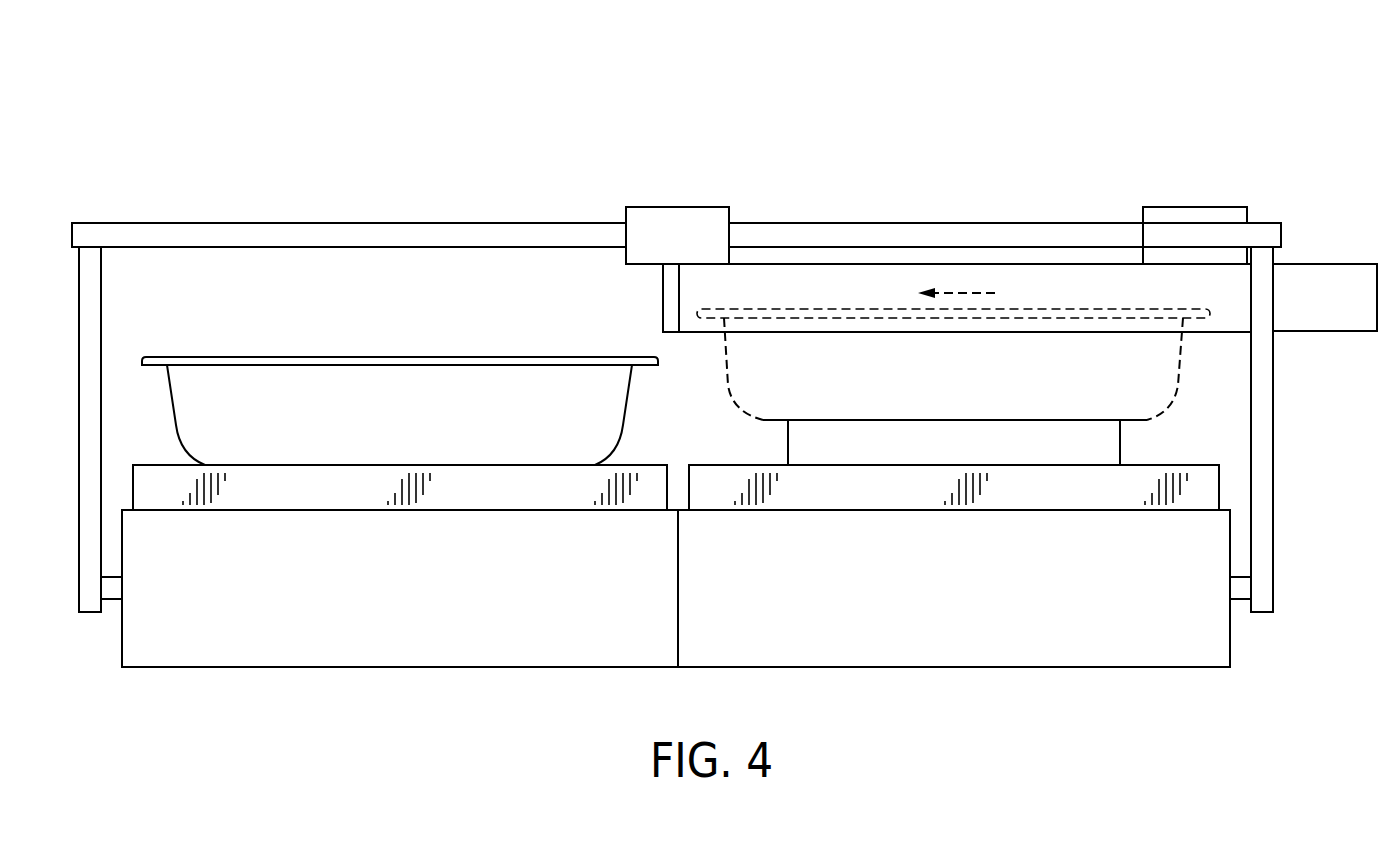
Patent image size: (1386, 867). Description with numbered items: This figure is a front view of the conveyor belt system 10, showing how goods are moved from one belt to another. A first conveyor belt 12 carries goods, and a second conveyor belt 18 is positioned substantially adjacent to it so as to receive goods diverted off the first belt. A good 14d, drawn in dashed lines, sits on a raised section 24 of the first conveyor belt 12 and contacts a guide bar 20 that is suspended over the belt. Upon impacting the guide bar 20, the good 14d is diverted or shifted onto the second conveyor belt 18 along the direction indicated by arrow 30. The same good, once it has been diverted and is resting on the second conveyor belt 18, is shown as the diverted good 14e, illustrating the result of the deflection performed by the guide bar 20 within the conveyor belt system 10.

The conveyor belt system 10 is at (200, 140).
The first conveyor belt 12 is at (1070, 495).
The good 14d is at (1047, 357).
The diverted good 14e is at (402, 378).
The second conveyor belt 18 is at (449, 495).
The guide bar 20 is at (1328, 272).
The raised section 24 is at (956, 432).
The arrow 30 is at (968, 290).